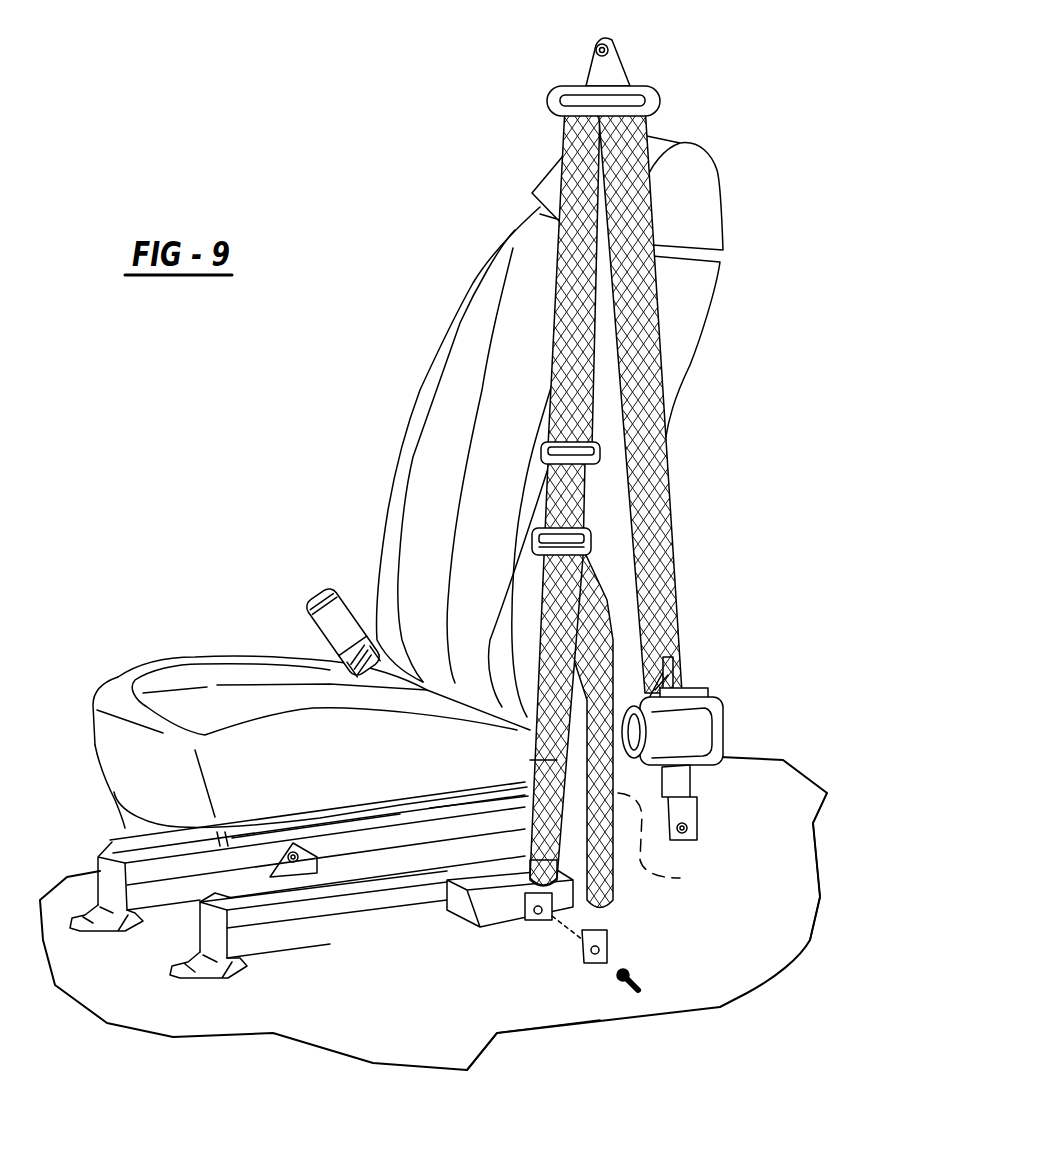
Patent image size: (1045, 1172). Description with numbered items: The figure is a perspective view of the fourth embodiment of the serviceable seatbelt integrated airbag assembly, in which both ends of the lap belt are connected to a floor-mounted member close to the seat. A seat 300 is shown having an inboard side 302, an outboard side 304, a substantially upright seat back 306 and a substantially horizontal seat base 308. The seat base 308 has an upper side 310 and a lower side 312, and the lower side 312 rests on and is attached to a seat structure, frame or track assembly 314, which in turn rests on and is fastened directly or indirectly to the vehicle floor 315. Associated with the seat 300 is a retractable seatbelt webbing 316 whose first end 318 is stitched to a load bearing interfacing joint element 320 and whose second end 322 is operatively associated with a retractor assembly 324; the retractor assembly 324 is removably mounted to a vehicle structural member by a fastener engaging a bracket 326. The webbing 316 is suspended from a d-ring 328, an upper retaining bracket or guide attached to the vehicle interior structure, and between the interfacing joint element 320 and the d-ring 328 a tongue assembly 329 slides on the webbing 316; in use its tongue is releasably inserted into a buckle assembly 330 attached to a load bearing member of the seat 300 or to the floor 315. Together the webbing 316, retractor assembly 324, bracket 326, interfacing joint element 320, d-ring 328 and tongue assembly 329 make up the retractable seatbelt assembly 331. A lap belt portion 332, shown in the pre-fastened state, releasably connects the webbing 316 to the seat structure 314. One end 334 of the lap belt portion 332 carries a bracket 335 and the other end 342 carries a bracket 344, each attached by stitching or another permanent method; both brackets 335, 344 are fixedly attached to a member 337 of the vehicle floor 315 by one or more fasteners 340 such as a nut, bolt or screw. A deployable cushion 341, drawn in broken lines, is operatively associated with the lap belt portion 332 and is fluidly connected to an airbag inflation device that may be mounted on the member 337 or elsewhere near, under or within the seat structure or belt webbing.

The seat 300 is at (396, 490).
The inboard side 302 is at (378, 518).
The outboard side 304 is at (612, 522).
The seat back 306 is at (475, 286).
The seat base 308 is at (188, 665).
The upper side 310 is at (120, 680).
The lower side 312 is at (125, 815).
The seat structure, frame or track assembly 314 is at (295, 883).
The vehicle floor 315 is at (790, 934).
The retractable seatbelt webbing 316 is at (640, 340).
The first end 318 is at (560, 498).
The load bearing interfacing joint element 320 is at (535, 548).
The second end 322 is at (665, 637).
The retractor assembly 324 is at (693, 730).
The bracket 326 is at (690, 807).
The d-ring 328 is at (612, 52).
The tongue assembly 329 is at (543, 455).
The buckle assembly 330 is at (310, 628).
The retractable seatbelt assembly 331 is at (692, 443).
The lap belt portion 332 is at (518, 760).
The end 334 is at (535, 855).
The bracket 335 is at (528, 912).
The member 337 is at (460, 900).
The fastener 340 is at (433, 919).
The deployable cushion 341 is at (670, 846).
The end 342 is at (617, 900).
The bracket 344 is at (533, 1045).